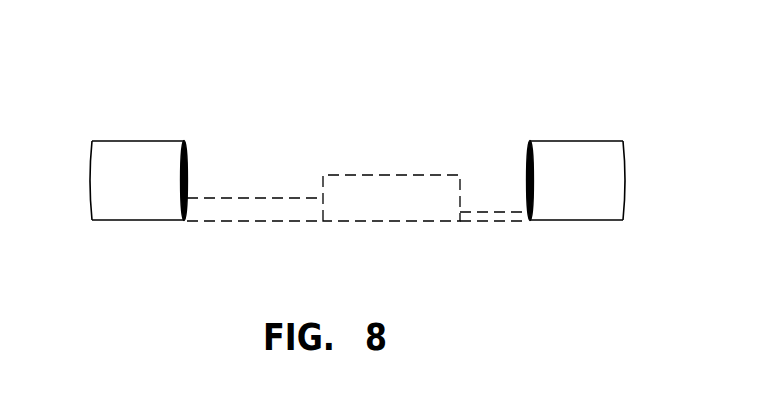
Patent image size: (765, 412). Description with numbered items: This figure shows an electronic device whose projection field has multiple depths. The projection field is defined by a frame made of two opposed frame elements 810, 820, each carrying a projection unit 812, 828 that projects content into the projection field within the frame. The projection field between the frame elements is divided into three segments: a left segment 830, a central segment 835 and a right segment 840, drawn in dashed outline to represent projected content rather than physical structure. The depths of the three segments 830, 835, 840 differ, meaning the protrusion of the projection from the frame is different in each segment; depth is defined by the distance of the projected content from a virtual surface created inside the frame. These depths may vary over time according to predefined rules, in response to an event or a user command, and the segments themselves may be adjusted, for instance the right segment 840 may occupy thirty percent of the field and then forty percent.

The frame element 810 is at (623, 187).
The projection unit 812 is at (526, 158).
The frame element 820 is at (90, 177).
The projection unit 828 is at (187, 150).
The left segment 830 is at (252, 212).
The central segment 835 is at (372, 208).
The right segment 840 is at (503, 216).